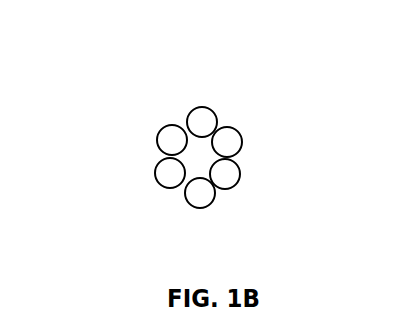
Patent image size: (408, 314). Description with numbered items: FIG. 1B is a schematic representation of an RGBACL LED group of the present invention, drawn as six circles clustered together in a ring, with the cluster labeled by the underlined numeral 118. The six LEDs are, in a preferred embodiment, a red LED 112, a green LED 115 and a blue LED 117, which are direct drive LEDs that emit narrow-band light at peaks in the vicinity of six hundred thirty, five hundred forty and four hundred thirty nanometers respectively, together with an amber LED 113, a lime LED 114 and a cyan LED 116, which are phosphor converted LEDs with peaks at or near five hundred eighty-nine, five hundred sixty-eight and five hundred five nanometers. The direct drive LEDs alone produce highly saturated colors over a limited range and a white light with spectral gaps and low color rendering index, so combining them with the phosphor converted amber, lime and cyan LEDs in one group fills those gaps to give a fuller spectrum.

The red LED 112 is at (187, 201).
The amber LED 113 is at (155, 175).
The lime LED 114 is at (157, 135).
The green LED 115 is at (201, 107).
The cyan LED 116 is at (242, 138).
The blue LED 117 is at (242, 176).
The fiber bundle 118 is at (227, 258).